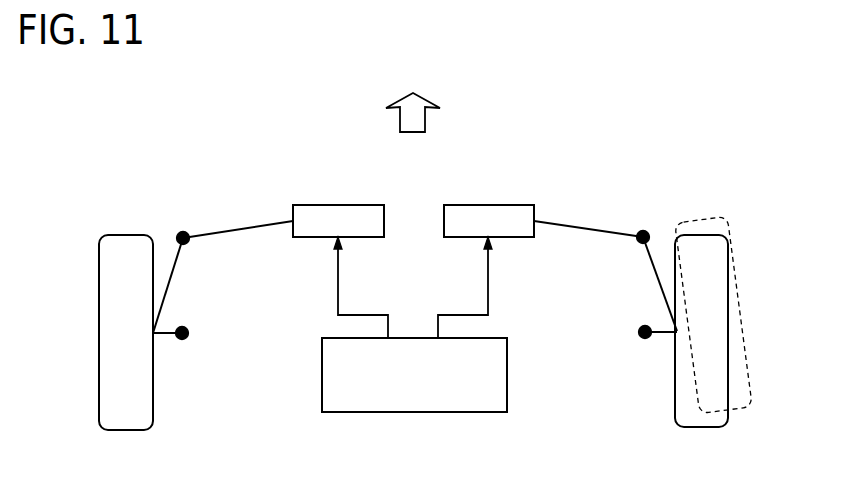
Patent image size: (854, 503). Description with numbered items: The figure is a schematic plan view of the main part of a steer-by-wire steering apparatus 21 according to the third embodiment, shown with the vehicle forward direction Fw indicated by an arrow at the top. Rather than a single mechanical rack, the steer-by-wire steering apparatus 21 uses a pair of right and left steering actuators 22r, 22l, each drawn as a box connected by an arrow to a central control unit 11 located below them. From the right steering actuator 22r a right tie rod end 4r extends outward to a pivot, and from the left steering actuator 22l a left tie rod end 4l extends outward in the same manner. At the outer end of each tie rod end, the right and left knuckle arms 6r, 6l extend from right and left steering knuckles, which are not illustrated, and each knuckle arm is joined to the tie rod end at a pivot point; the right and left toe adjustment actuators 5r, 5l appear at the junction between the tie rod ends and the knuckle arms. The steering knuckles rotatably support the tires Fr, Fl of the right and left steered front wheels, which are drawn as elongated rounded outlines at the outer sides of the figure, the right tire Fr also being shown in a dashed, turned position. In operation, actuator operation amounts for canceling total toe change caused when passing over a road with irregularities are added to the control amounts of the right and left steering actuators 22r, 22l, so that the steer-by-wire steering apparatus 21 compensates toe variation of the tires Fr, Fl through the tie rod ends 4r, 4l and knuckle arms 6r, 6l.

The controller 11 is at (343, 413).
The steer-by-wire steering apparatus 21 is at (572, 400).
The left steering actuator 22l is at (337, 205).
The right steering actuator 22r is at (487, 205).
The left tie rod end 4l is at (238, 228).
The right tie rod end 4r is at (590, 227).
The left toe adjustment actuator 5l is at (175, 287).
The right toe adjustment actuator 5r is at (657, 282).
The left knuckle arm 6l is at (168, 337).
The right knuckle arm 6r is at (663, 337).
The left front wheel tire Fl is at (127, 432).
The right front wheel tire Fr is at (699, 428).
The forward direction Fw is at (413, 95).